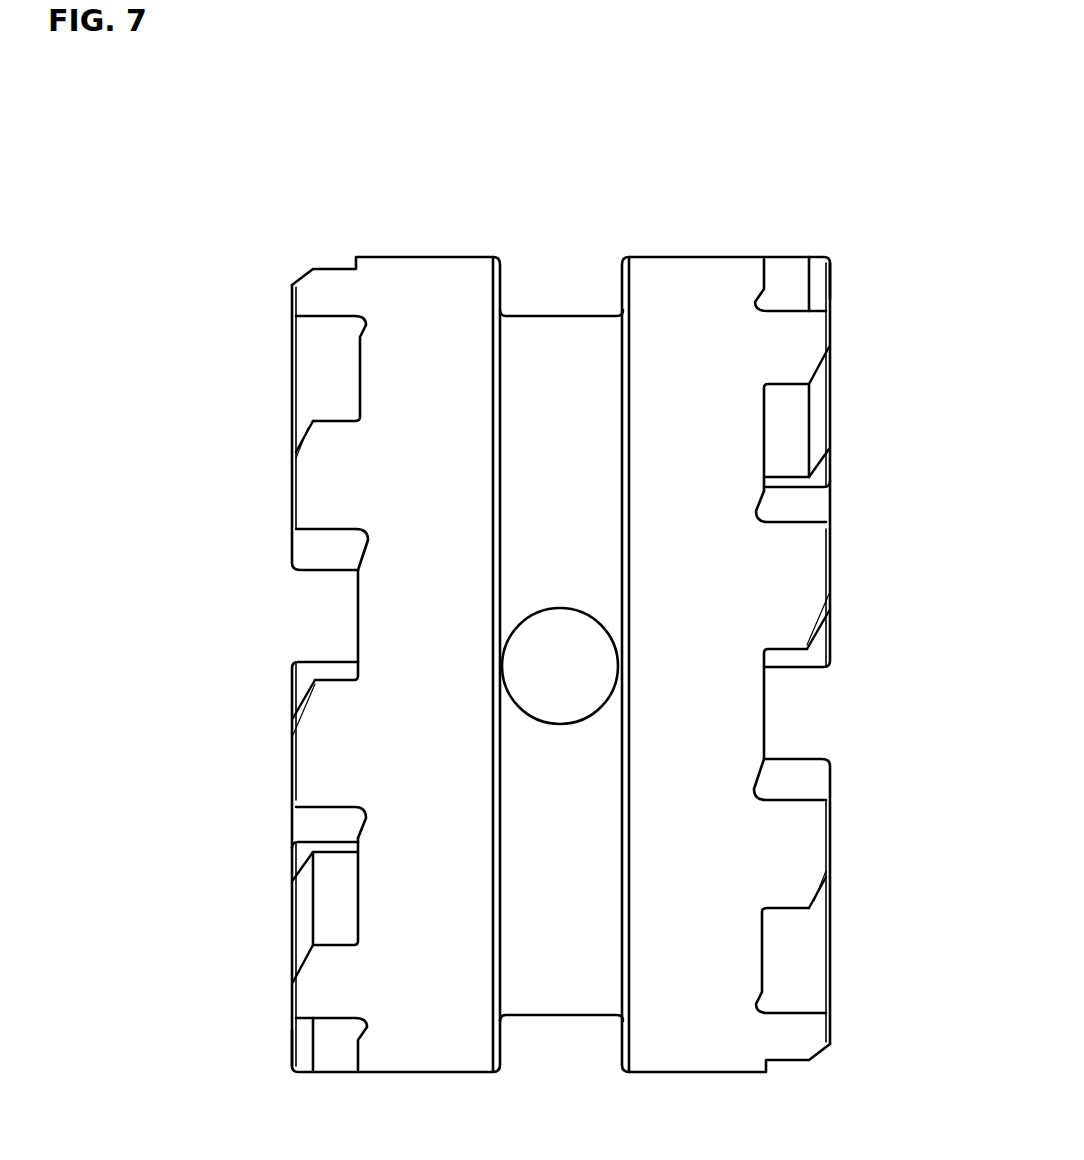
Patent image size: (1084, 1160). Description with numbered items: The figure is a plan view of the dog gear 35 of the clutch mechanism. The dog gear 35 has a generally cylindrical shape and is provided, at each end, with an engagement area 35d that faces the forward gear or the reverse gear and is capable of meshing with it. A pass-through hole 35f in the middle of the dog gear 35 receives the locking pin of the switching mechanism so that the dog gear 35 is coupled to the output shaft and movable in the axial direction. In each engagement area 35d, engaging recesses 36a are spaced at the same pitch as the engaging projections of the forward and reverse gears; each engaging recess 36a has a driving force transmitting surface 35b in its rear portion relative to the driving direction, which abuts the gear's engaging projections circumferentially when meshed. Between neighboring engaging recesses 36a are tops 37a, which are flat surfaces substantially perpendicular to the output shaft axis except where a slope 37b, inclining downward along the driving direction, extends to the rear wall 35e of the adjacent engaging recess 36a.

The dog gear 35 is at (730, 224).
The driving force transmitting surface 35b is at (325, 552).
The engagement area 35d is at (292, 1045).
The rear wall 35e is at (330, 405).
The pass-through hole 35f is at (560, 607).
The engaging recess 36a is at (358, 366).
The top 37a is at (293, 488).
The slope 37b is at (300, 440).